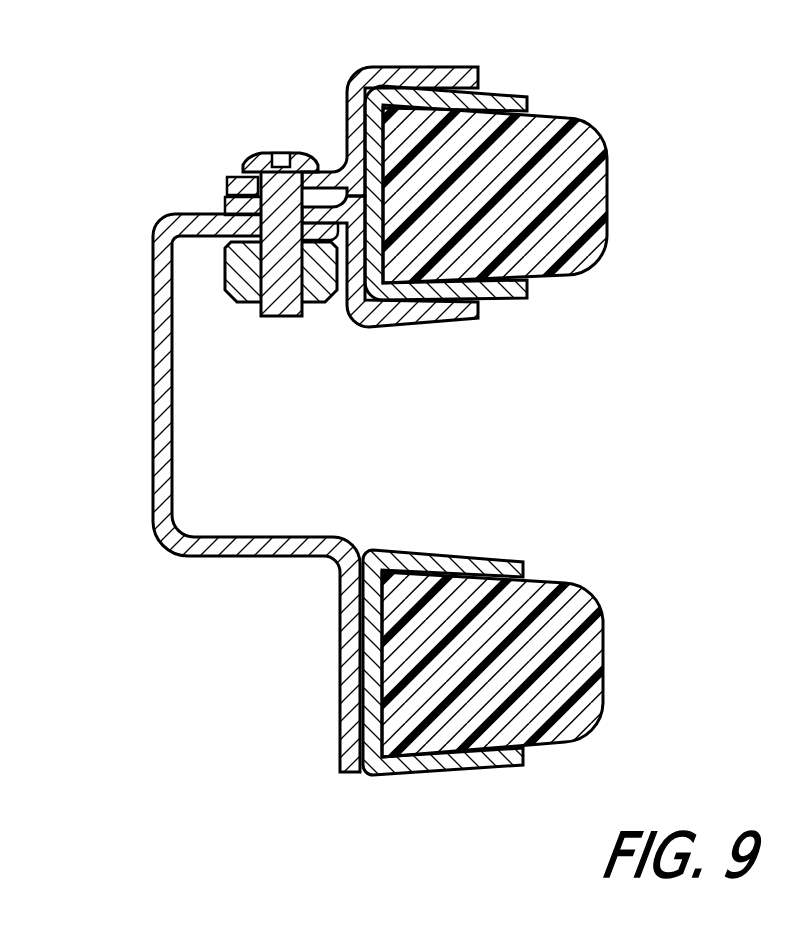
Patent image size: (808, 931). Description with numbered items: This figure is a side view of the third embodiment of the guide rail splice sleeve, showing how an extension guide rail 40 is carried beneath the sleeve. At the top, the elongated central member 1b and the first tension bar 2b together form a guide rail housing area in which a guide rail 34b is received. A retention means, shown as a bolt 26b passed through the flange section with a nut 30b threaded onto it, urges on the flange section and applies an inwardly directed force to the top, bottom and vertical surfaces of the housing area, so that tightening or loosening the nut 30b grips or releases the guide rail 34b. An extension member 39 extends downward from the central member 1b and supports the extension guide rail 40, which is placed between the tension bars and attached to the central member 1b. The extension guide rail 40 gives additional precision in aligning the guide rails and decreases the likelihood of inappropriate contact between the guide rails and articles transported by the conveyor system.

The central member 1b is at (395, 66).
The first tension bar 2b is at (403, 323).
The bolt 26b is at (273, 152).
The nut 30b is at (323, 302).
The guide rail 34b is at (608, 193).
The extension member 39 is at (153, 450).
The extension guide rail 40 is at (603, 619).